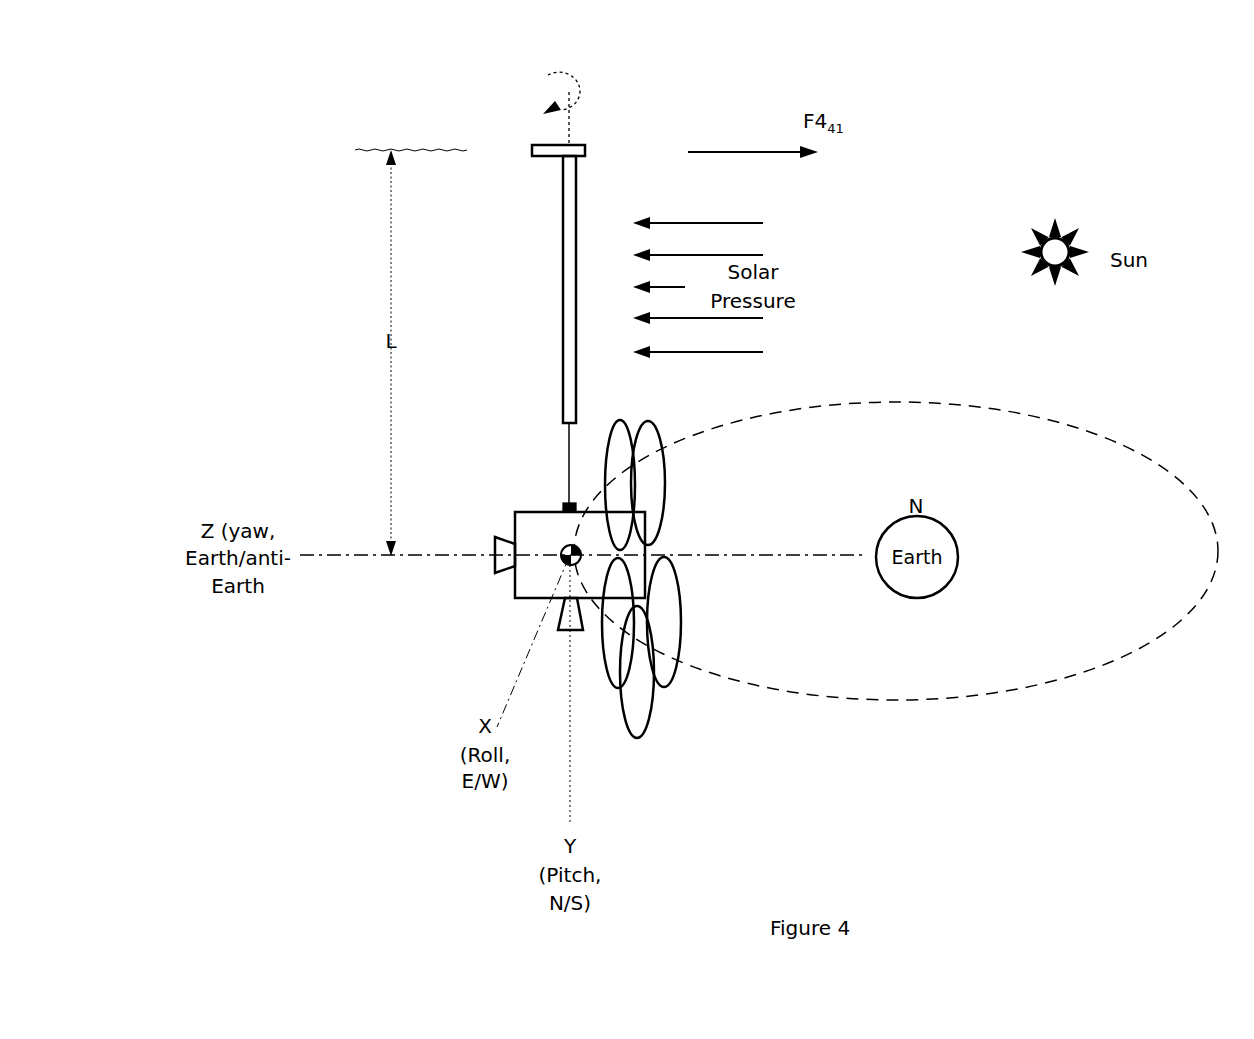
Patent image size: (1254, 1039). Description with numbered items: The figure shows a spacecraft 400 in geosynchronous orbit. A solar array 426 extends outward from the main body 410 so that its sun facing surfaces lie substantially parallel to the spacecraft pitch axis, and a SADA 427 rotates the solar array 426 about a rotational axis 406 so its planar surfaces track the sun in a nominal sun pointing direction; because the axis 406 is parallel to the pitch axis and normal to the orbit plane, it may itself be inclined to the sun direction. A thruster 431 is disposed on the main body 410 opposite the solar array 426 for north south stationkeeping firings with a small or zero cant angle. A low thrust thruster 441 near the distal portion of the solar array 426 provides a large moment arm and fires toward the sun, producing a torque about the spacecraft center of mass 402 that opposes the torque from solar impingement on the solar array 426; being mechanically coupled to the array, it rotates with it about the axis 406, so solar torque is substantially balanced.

The spacecraft 400 is at (446, 50).
The rotational axis 406 is at (572, 133).
The low thrust thruster 441 is at (587, 150).
The solar array 426 is at (562, 210).
The SADA 427 is at (563, 504).
The main body 410 is at (532, 574).
The spacecraft center of mass 402 is at (562, 548).
The thruster 431 is at (598, 642).